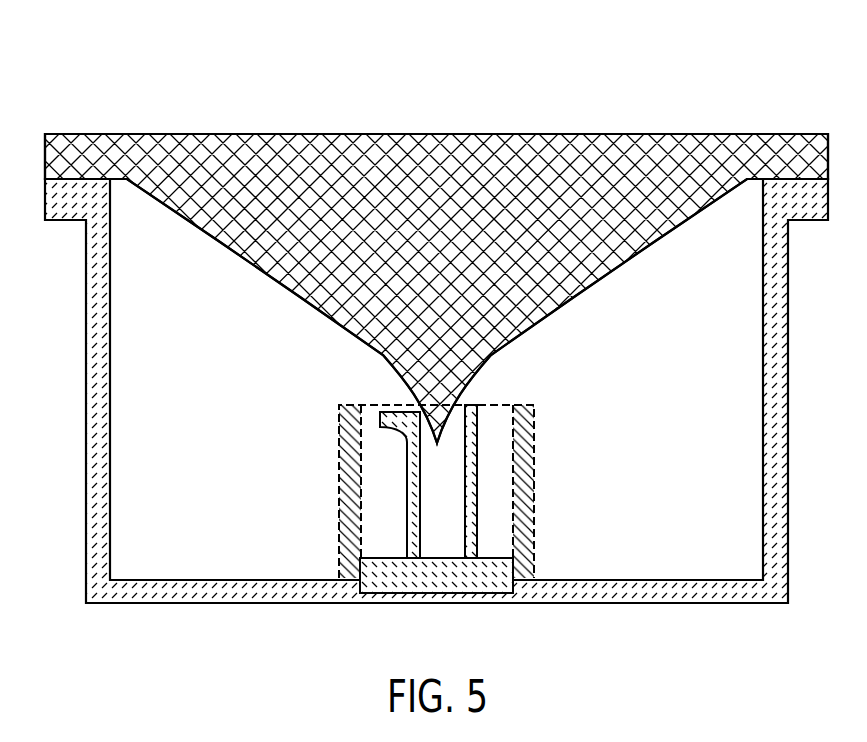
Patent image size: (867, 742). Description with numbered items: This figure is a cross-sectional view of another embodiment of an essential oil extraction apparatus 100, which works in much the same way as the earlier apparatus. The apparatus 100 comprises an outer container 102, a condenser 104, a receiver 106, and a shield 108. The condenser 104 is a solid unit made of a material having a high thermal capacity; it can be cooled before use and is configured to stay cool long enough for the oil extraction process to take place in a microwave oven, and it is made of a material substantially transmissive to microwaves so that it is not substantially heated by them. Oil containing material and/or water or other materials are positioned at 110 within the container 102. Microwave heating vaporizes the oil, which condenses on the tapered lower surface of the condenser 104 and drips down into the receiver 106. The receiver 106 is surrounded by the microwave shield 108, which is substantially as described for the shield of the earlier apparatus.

The essential oil extraction apparatus 100 is at (98, 55).
The outer container 102 is at (85, 375).
The condenser 104 is at (632, 260).
The receiver 106 is at (476, 525).
The microwave shield 108 is at (533, 442).
The position of oil containing material 110 is at (248, 553).